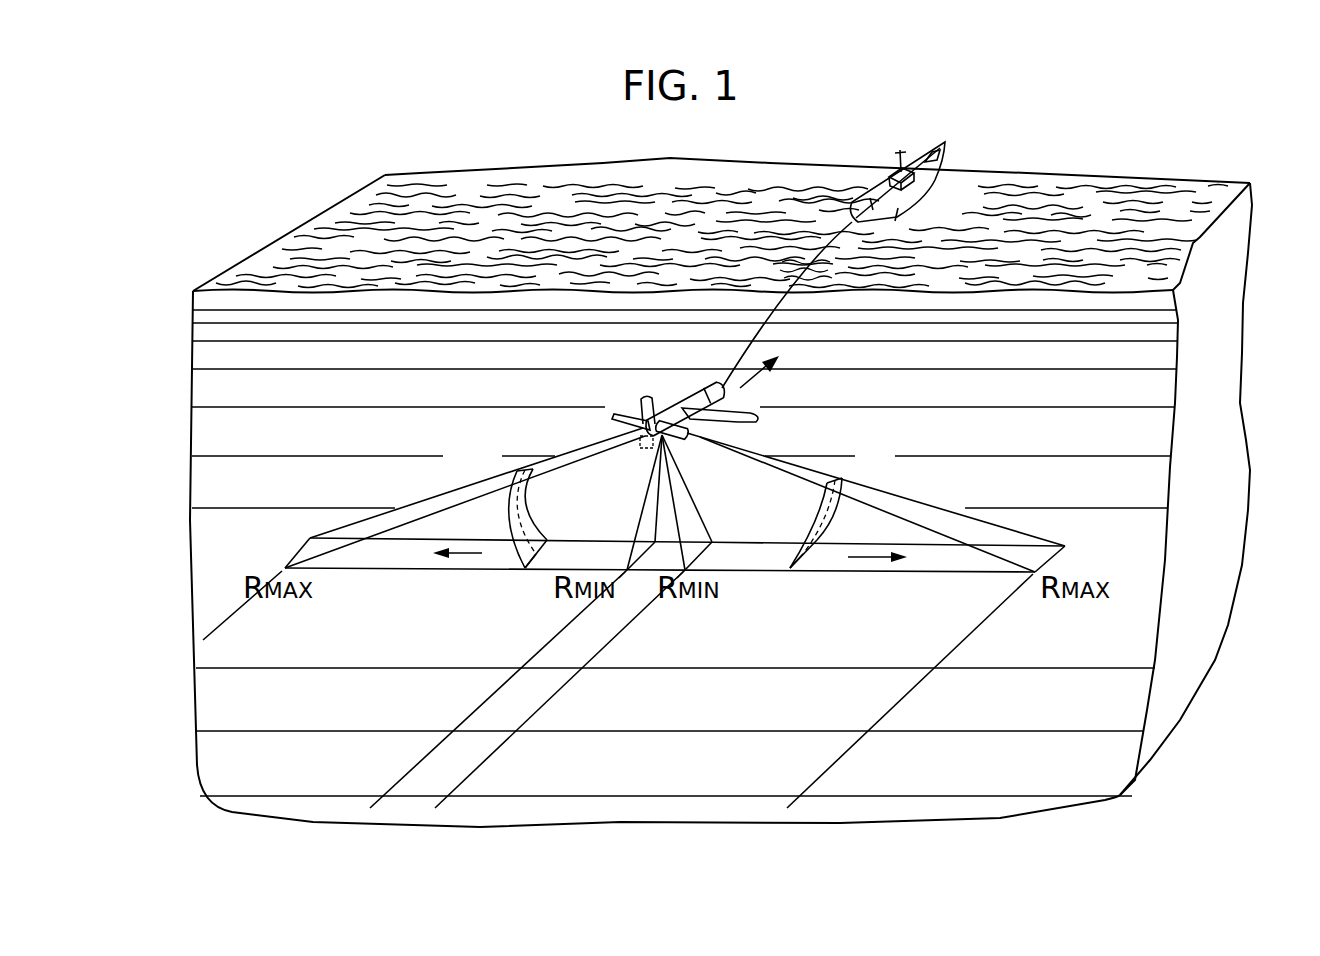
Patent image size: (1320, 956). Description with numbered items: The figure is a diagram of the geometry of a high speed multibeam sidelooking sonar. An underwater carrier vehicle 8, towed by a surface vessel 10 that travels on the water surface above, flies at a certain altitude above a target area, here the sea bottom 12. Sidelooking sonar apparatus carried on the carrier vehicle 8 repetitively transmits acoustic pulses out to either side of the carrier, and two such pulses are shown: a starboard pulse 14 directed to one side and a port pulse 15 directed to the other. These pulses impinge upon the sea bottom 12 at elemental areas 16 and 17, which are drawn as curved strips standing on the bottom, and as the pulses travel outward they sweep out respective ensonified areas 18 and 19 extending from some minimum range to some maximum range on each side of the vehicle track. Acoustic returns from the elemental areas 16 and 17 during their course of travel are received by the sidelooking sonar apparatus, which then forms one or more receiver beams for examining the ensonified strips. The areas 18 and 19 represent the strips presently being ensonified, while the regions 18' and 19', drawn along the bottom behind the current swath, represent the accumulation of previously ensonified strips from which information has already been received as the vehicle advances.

The underwater carrier vehicle 8 is at (738, 406).
The surface vessel 10 is at (947, 143).
The sea bottom 12 is at (702, 646).
The starboard pulse 14 is at (842, 478).
The port pulse 15 is at (517, 471).
The elemental area 16 is at (790, 571).
The elemental area 17 is at (516, 578).
The ensonified area 18 is at (875, 577).
The ensonified area 19 is at (470, 575).
The accumulation of previously ensonified strips 18' is at (916, 691).
The accumulation of previously ensonified strips 19' is at (248, 609).